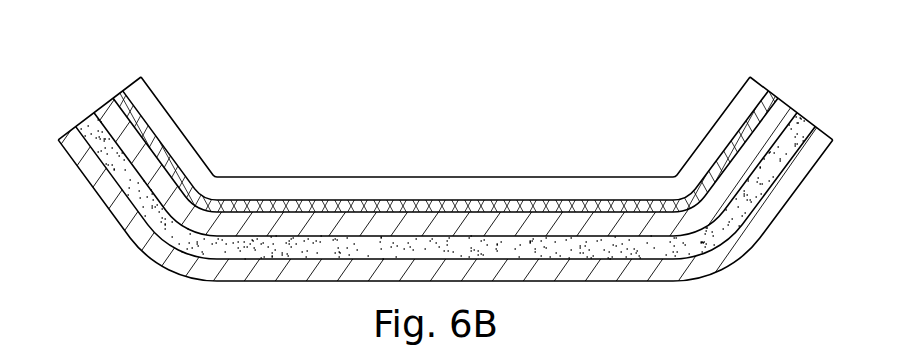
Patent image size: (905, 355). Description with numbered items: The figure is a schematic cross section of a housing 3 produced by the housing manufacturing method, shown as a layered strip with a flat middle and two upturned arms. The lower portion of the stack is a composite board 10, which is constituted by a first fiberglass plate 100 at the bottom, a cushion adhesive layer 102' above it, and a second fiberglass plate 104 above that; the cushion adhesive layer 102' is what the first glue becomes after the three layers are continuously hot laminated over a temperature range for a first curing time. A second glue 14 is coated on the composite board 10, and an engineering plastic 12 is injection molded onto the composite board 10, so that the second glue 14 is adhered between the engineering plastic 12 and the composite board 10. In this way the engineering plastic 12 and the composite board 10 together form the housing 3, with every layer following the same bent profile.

The housing 3 is at (428, 150).
The composite board 10 is at (428, 171).
The engineering plastic 12 is at (622, 195).
The second glue 14 is at (548, 210).
The first fiberglass plate 100 is at (522, 111).
The cushion adhesive layer 102' is at (446, 183).
The second fiberglass plate 104 is at (497, 227).